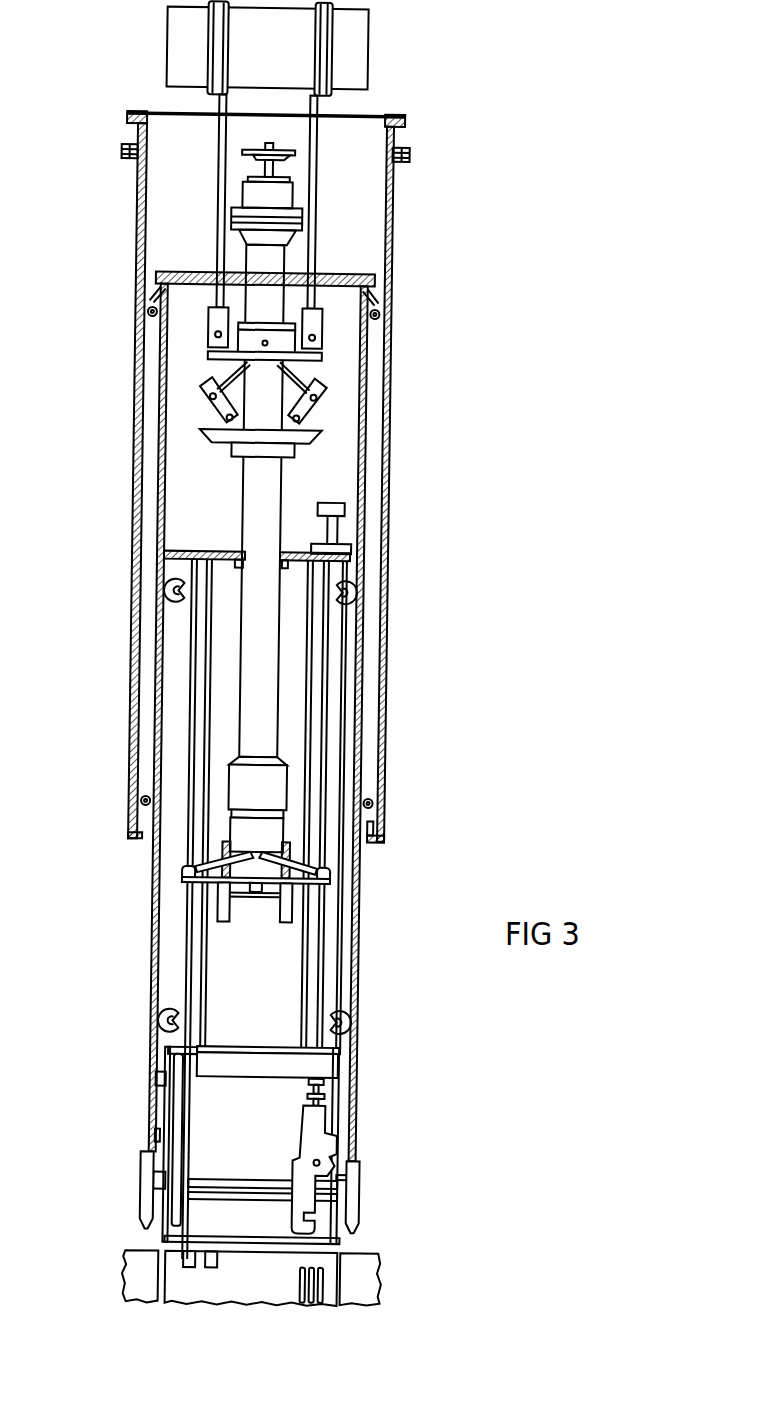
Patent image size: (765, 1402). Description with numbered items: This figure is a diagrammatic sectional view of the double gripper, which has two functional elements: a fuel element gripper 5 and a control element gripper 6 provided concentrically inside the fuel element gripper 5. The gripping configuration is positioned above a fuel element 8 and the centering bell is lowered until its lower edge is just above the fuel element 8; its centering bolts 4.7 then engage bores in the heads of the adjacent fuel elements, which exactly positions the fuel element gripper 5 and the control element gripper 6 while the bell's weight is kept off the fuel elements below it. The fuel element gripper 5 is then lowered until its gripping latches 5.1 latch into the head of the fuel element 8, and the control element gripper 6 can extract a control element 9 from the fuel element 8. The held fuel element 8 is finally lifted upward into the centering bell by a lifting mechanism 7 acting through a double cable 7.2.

The lifting mechanism 7 is at (348, 39).
The double cable 7.2 is at (307, 107).
The control element gripper 6 is at (274, 775).
The control element 9 is at (228, 906).
The fuel element gripper 5 is at (328, 1063).
The gripping latches 5.1 is at (184, 1112).
The centering bolts 4.7 is at (357, 1177).
The fuel element 8 is at (328, 1263).